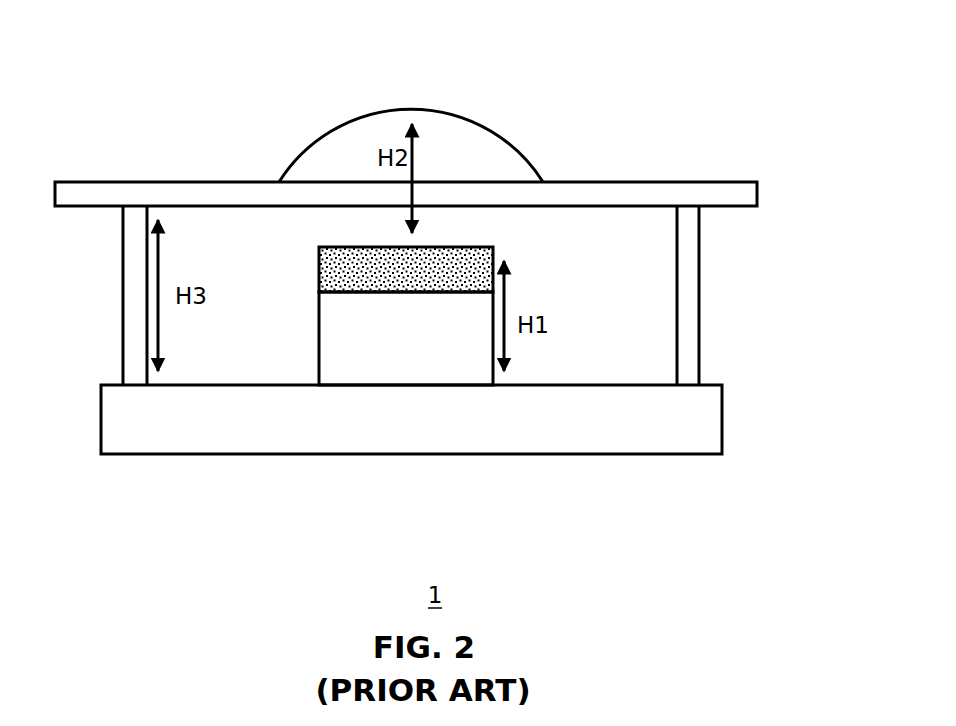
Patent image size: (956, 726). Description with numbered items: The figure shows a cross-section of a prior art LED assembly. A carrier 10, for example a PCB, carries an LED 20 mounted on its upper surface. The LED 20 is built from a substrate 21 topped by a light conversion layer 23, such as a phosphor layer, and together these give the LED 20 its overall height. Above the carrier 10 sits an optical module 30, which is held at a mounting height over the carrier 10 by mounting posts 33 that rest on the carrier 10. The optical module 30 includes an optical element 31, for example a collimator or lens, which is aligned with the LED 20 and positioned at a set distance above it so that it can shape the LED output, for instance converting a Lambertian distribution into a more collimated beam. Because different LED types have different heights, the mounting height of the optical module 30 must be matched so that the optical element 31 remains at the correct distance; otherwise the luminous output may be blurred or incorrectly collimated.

The carrier 10 is at (272, 437).
The LED 20 is at (357, 386).
The substrate 21 is at (413, 367).
The light conversion layer 23 is at (319, 267).
The optical module 30 is at (652, 193).
The optical element 31 is at (324, 146).
The mounting post 33 is at (688, 298).